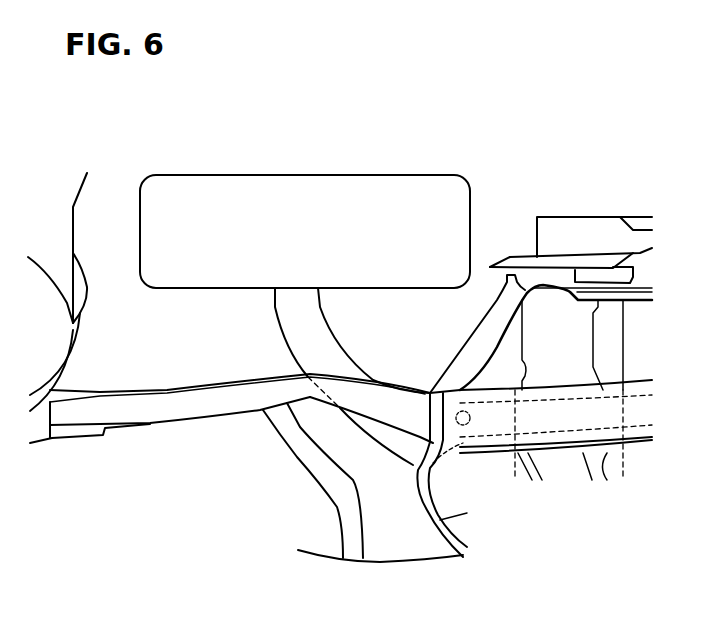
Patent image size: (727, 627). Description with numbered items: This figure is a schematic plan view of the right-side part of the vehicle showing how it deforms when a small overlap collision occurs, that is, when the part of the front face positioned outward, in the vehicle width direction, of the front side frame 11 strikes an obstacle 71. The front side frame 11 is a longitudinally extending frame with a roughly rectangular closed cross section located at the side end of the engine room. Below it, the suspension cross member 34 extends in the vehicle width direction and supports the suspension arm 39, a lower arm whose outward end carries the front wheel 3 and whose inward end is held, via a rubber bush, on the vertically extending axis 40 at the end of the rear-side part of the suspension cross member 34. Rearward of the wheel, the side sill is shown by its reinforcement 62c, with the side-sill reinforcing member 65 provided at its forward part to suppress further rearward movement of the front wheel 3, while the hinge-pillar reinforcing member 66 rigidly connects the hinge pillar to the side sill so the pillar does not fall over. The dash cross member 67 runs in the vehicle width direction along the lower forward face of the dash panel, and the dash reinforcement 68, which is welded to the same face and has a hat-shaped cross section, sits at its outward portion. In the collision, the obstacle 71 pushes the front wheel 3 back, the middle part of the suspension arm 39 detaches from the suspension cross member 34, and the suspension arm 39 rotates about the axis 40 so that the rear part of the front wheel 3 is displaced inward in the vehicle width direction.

The front wheel 3 is at (280, 187).
The front side frame 11 is at (153, 400).
The suspension cross member 34 is at (378, 492).
The suspension arm 39 is at (295, 317).
The axis 40 is at (460, 411).
The reinforcement 62c is at (603, 237).
The side-sill reinforcing member 65 is at (633, 223).
The hinge-pillar reinforcing member 66 is at (588, 277).
The dash cross member 67 is at (443, 537).
The dash reinforcement 68 is at (478, 333).
The obstacle 71 is at (42, 282).